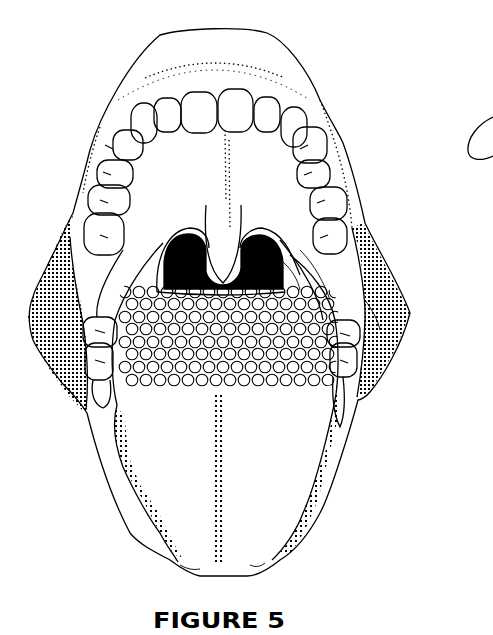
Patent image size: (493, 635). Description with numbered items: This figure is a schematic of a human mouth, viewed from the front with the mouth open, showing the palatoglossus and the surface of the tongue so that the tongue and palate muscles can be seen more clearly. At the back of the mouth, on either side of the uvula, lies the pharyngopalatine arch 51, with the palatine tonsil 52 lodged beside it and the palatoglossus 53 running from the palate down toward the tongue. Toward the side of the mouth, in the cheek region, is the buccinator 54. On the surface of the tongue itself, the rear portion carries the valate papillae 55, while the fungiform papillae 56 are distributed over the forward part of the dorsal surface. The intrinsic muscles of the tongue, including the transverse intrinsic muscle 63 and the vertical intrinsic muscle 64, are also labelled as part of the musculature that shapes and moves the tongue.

The pharyngopalatine arch 51 is at (268, 245).
The palatine tonsil 52 is at (295, 278).
The palatoglossus 53 is at (323, 292).
The buccinator 54 is at (375, 320).
The valate papillae 55 is at (233, 325).
The fungiform papillae 56 is at (245, 508).
The transverse intrinsic muscle 63 is at (480, 591).
The vertical intrinsic muscle 64 is at (492, 620).